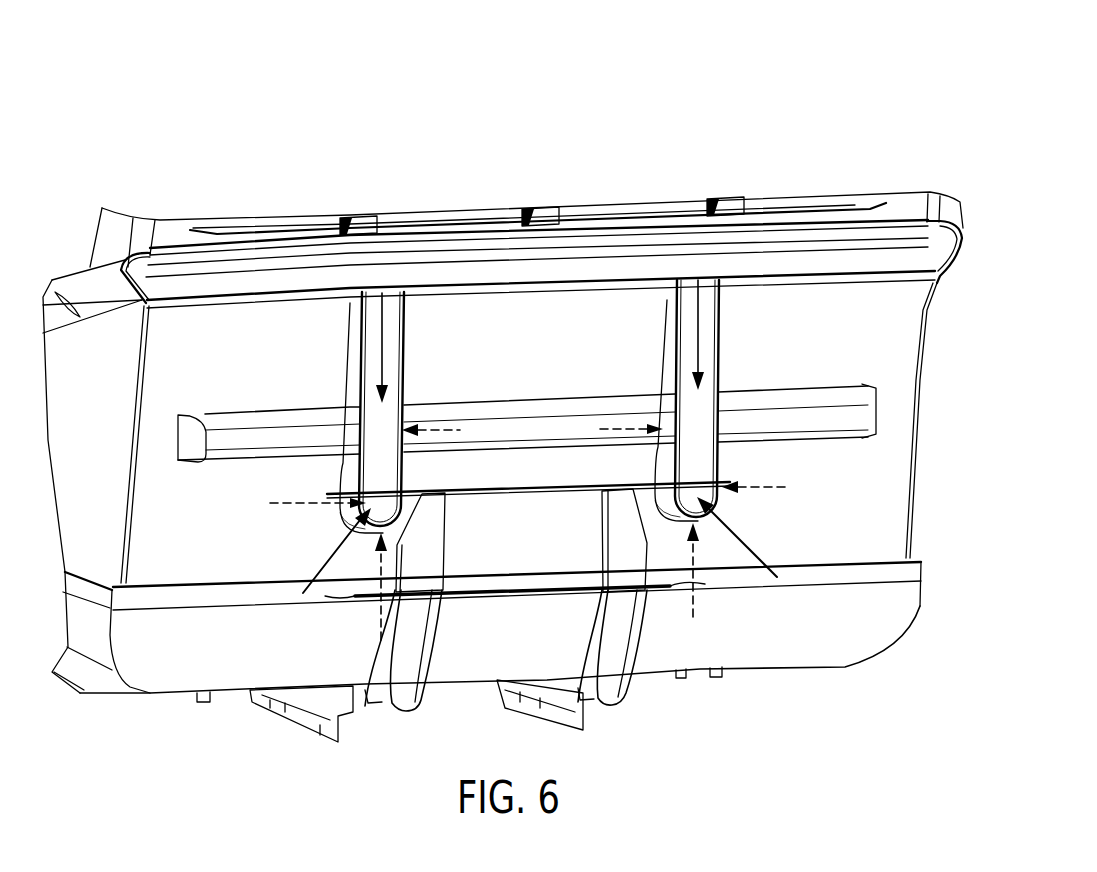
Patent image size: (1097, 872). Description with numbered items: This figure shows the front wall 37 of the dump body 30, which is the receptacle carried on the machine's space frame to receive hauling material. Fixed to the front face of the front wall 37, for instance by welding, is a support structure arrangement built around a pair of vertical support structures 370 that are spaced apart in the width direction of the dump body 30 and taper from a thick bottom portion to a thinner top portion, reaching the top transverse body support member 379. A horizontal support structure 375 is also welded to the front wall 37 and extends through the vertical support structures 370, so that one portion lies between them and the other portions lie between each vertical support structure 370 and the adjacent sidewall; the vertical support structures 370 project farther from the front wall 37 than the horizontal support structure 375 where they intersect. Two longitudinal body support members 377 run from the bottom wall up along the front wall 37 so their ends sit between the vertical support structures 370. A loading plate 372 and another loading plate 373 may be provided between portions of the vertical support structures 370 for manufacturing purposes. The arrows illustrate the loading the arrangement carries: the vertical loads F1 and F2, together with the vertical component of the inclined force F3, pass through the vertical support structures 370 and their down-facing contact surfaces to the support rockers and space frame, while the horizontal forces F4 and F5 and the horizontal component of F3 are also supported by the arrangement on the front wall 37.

The dump body 30 is at (160, 97).
The front wall 37 is at (897, 323).
The vertical support structures 370 is at (367, 377).
The loading plate 372 is at (523, 493).
The loading plate 373 is at (525, 594).
The horizontal support structure 375 is at (533, 342).
The longitudinal body support members 377 is at (372, 690).
The top transverse body support member 379 is at (813, 262).
The vertical force F1 is at (387, 330).
The vertical force F2 is at (372, 612).
The inclined force F3 is at (322, 565).
The horizontal force F4 is at (297, 502).
The horizontal force F5 is at (457, 428).